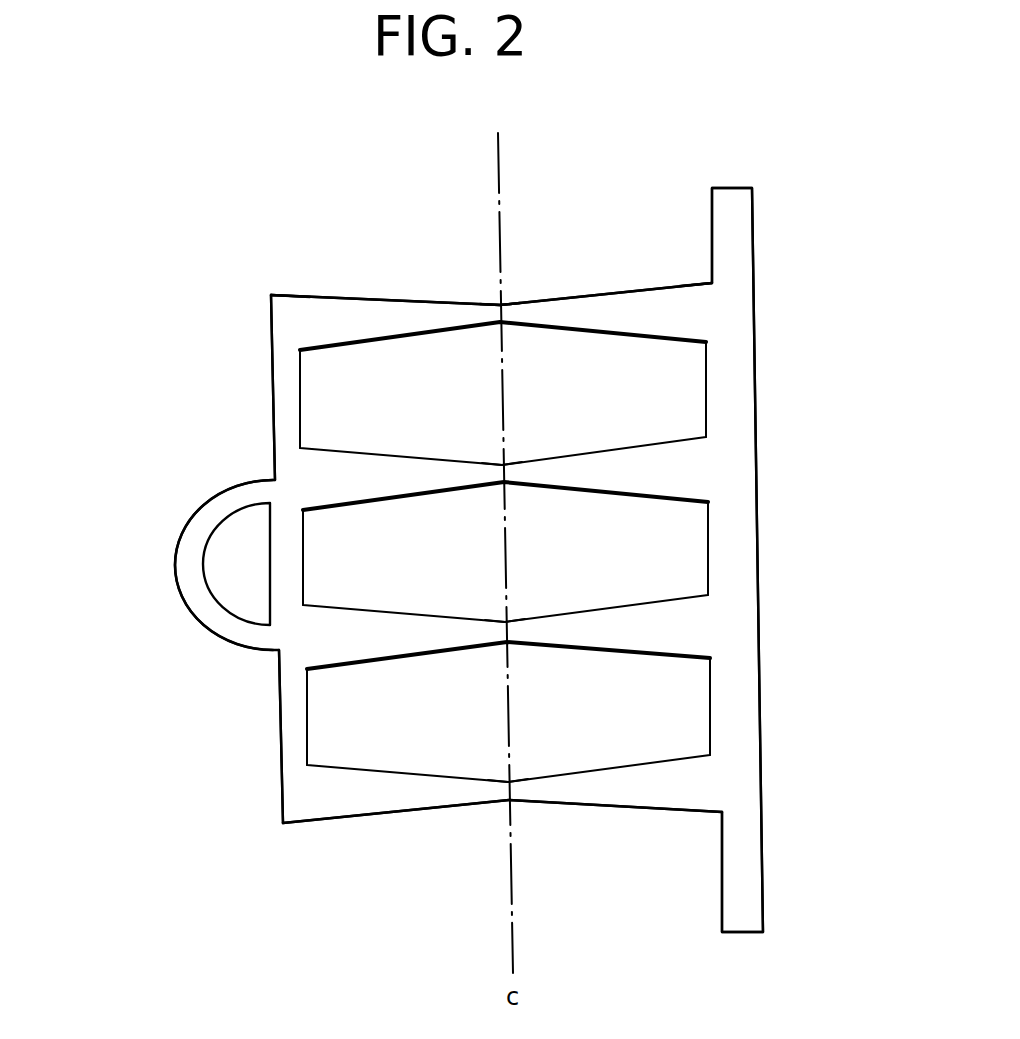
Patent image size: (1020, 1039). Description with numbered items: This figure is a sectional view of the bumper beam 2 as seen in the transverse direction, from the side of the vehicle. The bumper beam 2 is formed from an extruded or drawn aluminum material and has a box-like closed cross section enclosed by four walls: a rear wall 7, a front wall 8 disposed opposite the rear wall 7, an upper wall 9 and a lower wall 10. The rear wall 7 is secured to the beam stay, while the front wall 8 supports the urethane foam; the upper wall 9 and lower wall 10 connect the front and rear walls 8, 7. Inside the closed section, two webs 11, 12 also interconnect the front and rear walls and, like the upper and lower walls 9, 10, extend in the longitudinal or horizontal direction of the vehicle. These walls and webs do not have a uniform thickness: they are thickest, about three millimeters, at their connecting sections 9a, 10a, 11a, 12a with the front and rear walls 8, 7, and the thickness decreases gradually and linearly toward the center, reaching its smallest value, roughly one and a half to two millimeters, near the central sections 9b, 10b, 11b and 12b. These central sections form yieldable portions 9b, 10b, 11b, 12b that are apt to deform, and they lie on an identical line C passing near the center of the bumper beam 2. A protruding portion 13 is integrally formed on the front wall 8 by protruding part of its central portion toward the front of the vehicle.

The bumper beam 2 is at (210, 862).
The rear wall 7 is at (733, 500).
The front wall 8 is at (296, 743).
The upper wall 9 is at (378, 312).
The connecting section of upper wall 9a is at (282, 295).
The central section of upper wall 9b is at (505, 303).
The lower wall 10 is at (393, 797).
The connecting section of lower wall 10a is at (310, 765).
The central section of lower wall 10b is at (510, 780).
The web 11 is at (583, 462).
The connecting section of web 11a is at (305, 447).
The central section of web 11b is at (505, 463).
The web 12 is at (585, 620).
The connecting section of web 12a is at (307, 605).
The central section of web 12b is at (508, 620).
The protruding portion 13 is at (203, 523).